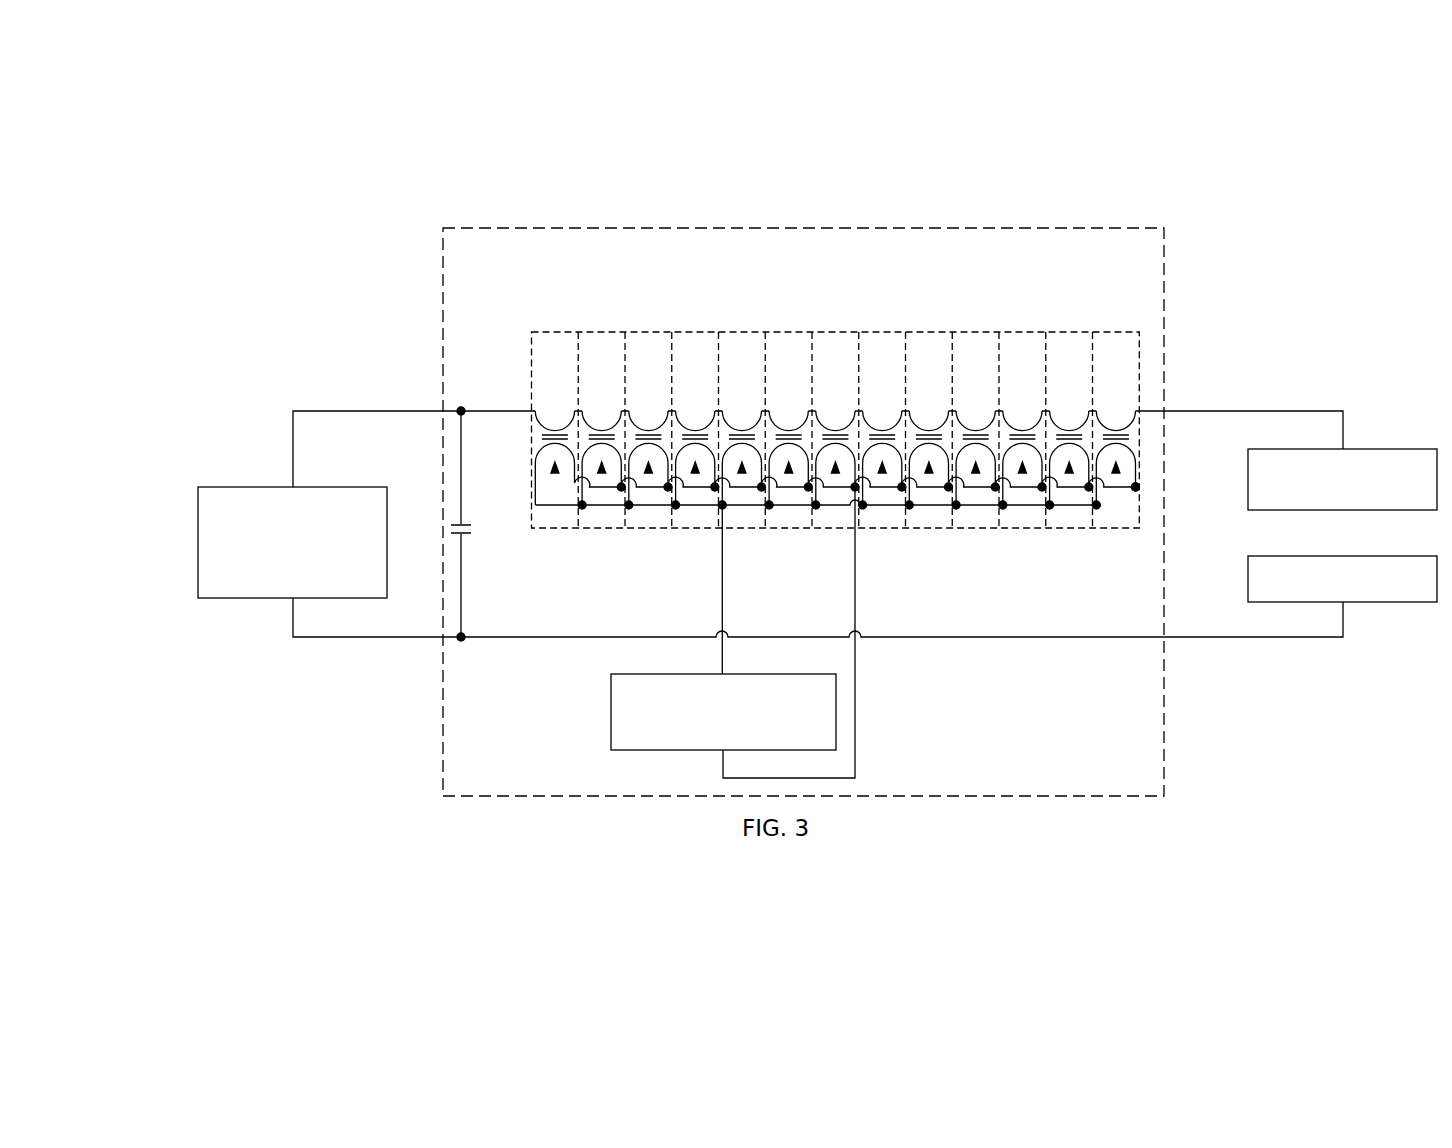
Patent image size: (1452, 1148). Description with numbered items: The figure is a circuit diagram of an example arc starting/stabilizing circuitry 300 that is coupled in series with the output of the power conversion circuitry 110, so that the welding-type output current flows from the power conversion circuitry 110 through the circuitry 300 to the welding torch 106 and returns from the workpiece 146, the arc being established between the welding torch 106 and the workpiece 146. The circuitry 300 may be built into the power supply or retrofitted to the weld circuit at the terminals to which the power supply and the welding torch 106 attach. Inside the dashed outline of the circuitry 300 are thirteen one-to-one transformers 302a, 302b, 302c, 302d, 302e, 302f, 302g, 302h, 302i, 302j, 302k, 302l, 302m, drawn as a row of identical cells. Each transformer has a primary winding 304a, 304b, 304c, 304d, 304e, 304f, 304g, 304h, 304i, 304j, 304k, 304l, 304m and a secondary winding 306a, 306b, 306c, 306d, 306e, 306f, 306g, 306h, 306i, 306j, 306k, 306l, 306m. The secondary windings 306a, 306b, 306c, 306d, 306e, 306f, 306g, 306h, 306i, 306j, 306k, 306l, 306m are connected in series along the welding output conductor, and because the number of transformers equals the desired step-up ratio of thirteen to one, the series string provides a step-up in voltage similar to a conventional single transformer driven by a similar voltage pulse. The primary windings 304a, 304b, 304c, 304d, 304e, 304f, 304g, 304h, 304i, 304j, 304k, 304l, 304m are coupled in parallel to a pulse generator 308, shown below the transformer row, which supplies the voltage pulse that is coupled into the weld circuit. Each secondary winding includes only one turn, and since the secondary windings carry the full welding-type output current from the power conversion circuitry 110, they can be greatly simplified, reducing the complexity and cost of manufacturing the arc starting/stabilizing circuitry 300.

The arc starting/stabilizing circuitry 300 is at (764, 512).
The power conversion circuitry 110 is at (259, 528).
The welding torch 106 is at (1342, 479).
The workpiece 146 is at (1342, 579).
The pulse generator 308 is at (689, 700).
The 1:1 transformer 302a is at (561, 548).
The 1:1 transformer 302b is at (567, 350).
The 1:1 transformer 302c is at (678, 548).
The 1:1 transformer 302d is at (694, 355).
The 1:1 transformer 302e is at (772, 521).
The 1:1 transformer 302f is at (796, 378).
The 1:1 transformer 302g is at (834, 553).
The 1:1 transformer 302h is at (918, 353).
The 1:1 transformer 302i is at (937, 521).
The 1:1 transformer 302j is at (984, 379).
The 1:1 transformer 302k is at (1126, 579).
The 1:1 transformer 302l is at (1155, 354).
The 1:1 transformer 302m is at (1188, 509).
The primary winding 304a is at (529, 499).
The primary winding 304b is at (574, 513).
The primary winding 304c is at (624, 524).
The primary winding 304d is at (671, 499).
The primary winding 304e is at (715, 513).
The primary winding 304f is at (768, 525).
The primary winding 304g is at (867, 541).
The primary winding 304h is at (910, 526).
The primary winding 304i is at (955, 514).
The primary winding 304j is at (1001, 500).
The primary winding 304k is at (1050, 526).
The primary winding 304l is at (1096, 514).
The primary winding 304m is at (1148, 496).
The secondary winding 306a is at (524, 375).
The secondary winding 306b is at (565, 366).
The secondary winding 306c is at (604, 353).
The secondary winding 306d is at (641, 333).
The secondary winding 306e is at (701, 306).
The secondary winding 306f is at (824, 315).
The secondary winding 306g is at (887, 300).
The secondary winding 306h is at (914, 356).
The secondary winding 306i is at (986, 315).
The secondary winding 306j is at (1029, 333).
The secondary winding 306k is at (1056, 355).
The secondary winding 306l is at (1123, 367).
The secondary winding 306m is at (1176, 386).